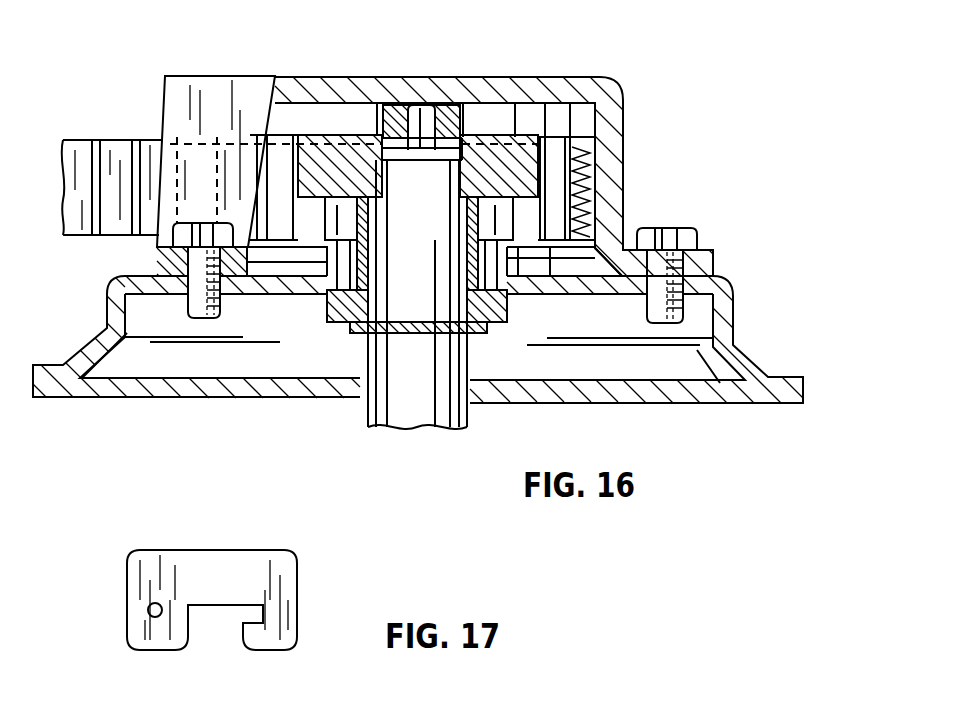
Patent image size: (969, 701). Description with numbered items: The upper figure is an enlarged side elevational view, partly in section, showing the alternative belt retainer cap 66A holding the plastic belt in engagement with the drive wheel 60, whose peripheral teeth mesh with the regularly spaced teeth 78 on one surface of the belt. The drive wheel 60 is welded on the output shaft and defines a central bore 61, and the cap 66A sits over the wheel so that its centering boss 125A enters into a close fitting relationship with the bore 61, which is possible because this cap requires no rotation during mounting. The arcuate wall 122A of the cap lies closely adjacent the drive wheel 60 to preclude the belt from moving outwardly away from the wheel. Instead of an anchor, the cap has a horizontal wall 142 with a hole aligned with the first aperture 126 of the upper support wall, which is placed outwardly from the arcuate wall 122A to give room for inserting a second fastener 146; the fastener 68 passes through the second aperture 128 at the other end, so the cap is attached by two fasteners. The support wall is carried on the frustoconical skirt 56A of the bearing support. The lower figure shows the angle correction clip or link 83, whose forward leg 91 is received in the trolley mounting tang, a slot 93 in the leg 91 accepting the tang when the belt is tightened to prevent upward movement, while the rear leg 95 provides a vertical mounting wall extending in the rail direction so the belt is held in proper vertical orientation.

In FIG. 16, the teeth 78 is at (82, 137).
In FIG. 16, the drive wheel 60 is at (350, 150).
In FIG. 16, the central bore 61 is at (418, 120).
In FIG. 16, the centering boss 125A is at (450, 117).
In FIG. 16, the belt retainer cap 66A is at (624, 90).
In FIG. 16, the arcuate wall 122A is at (628, 153).
In FIG. 16, the second fastener 146 is at (675, 230).
In FIG. 16, the horizontal wall 142 is at (720, 262).
In FIG. 16, the fastener 68 is at (173, 237).
In FIG. 16, the second aperture 128 is at (187, 297).
In FIG. 16, the first aperture 126 is at (647, 298).
In FIG. 16, the frustoconical skirt 56A is at (735, 340).
In FIG. 17, the angle correction link 83 is at (219, 545).
In FIG. 17, the forward leg 91 is at (297, 603).
In FIG. 17, the rear leg 95 is at (137, 617).
In FIG. 17, the slot 93 is at (243, 612).